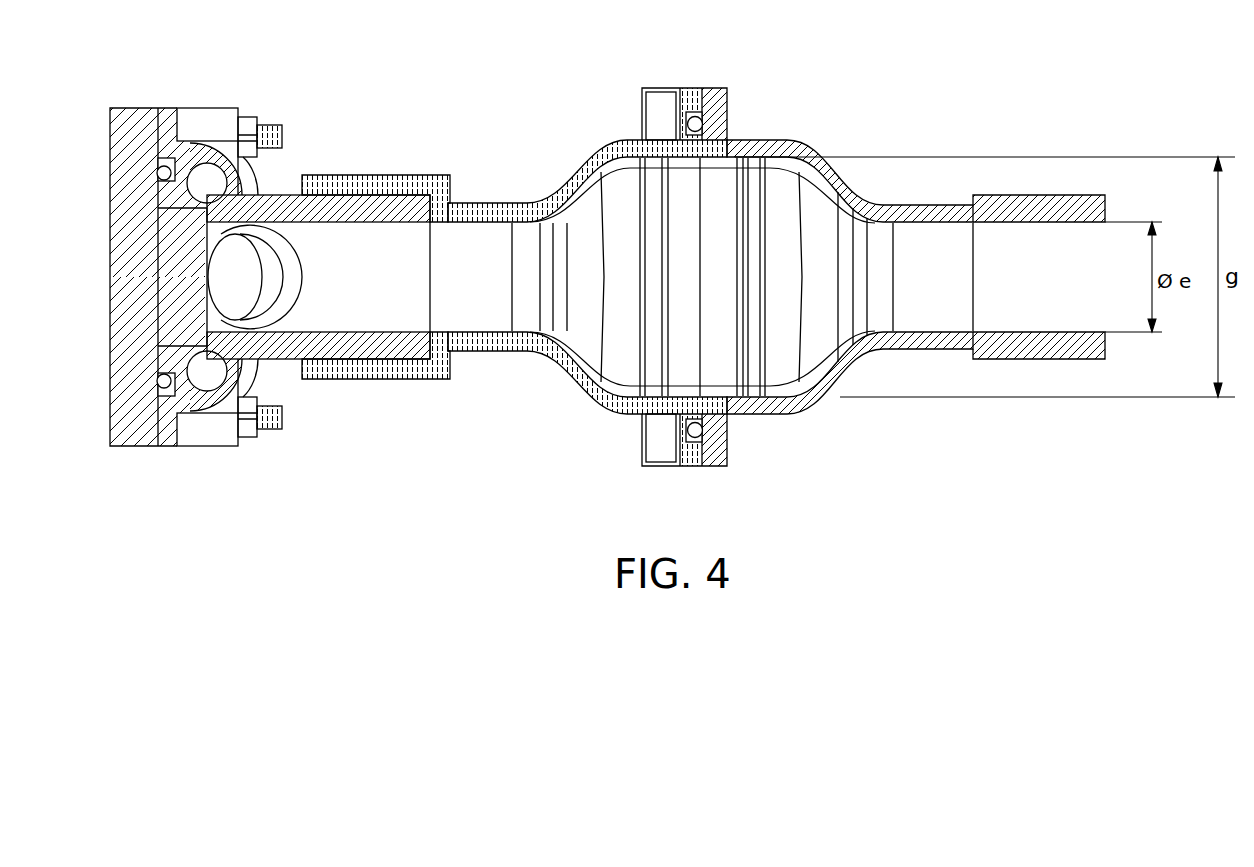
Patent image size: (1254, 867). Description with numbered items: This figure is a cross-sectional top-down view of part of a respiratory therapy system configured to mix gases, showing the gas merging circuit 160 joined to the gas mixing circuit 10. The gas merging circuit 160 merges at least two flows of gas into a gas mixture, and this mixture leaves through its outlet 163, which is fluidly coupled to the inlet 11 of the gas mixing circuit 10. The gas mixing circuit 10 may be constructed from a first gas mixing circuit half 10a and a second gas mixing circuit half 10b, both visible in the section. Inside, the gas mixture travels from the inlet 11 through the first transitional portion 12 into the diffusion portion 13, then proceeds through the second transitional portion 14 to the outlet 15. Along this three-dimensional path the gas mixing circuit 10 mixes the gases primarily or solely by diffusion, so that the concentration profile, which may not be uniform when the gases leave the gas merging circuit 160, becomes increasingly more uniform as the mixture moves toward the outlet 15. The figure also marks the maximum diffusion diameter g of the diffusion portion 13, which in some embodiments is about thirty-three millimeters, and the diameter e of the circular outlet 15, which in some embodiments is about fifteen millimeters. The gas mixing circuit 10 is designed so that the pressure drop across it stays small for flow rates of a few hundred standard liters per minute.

The gas merging circuit 160 is at (138, 118).
The outlet 163 is at (322, 200).
The inlet 11 is at (402, 186).
The first transitional portion 12 is at (620, 210).
The gas mixing circuit 10 is at (748, 140).
The first gas mixing circuit half 10a is at (622, 418).
The second gas mixing circuit half 10b is at (758, 418).
The diffusion portion 13 is at (702, 277).
The second transitional portion 14 is at (782, 212).
The outlet 15 is at (1032, 200).